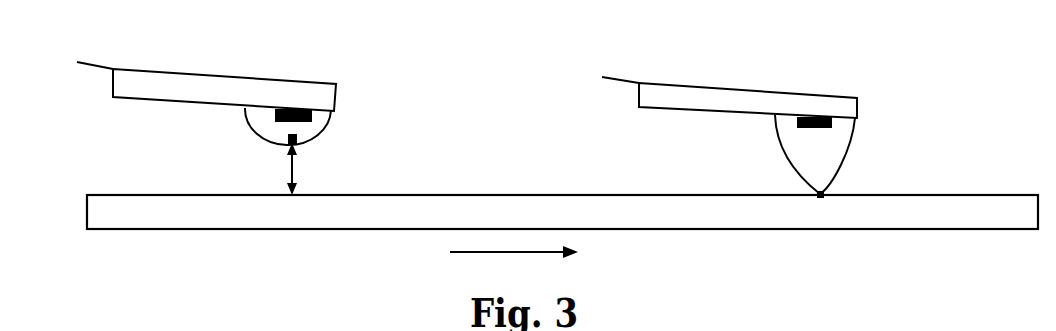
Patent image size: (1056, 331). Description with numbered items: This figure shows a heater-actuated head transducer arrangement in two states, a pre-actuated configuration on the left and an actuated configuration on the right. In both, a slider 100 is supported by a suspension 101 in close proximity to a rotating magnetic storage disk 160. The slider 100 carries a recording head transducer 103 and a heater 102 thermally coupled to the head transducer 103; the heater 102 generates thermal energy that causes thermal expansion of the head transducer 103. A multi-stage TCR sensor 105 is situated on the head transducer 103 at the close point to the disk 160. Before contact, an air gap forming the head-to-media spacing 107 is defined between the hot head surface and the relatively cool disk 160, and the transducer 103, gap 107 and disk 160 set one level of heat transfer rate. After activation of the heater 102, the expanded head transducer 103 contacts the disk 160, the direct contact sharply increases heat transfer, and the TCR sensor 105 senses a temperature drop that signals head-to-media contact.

The slider 100 is at (235, 76).
The suspension 101 is at (85, 63).
The heater 102 is at (268, 132).
The head transducer 103 is at (324, 121).
The multi-stage TCR sensor 105 is at (286, 141).
The head-to-media spacing 107 is at (296, 170).
The magnetic storage disk 160 is at (932, 222).